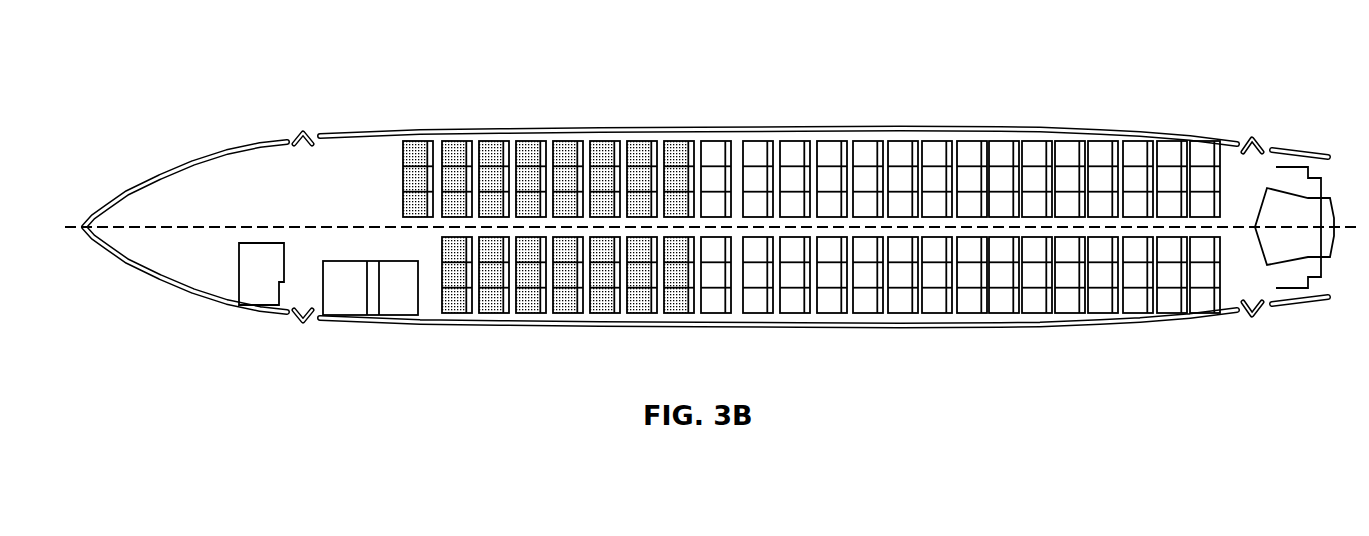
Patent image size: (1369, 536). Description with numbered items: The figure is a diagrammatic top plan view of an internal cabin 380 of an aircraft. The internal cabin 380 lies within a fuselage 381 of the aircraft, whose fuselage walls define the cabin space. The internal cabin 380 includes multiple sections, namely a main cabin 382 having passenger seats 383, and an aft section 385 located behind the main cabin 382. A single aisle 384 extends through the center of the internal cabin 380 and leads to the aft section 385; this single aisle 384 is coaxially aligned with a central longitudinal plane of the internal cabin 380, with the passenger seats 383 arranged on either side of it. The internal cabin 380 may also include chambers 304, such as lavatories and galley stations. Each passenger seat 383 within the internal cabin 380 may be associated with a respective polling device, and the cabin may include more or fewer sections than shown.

The internal cabin 380 is at (319, 74).
The fuselage 381 is at (516, 130).
The main cabin 382 is at (453, 155).
The passenger seats 383 is at (713, 160).
The single aisle 384 is at (830, 223).
The aft section 385 is at (1237, 163).
The chambers 304 is at (370, 288).